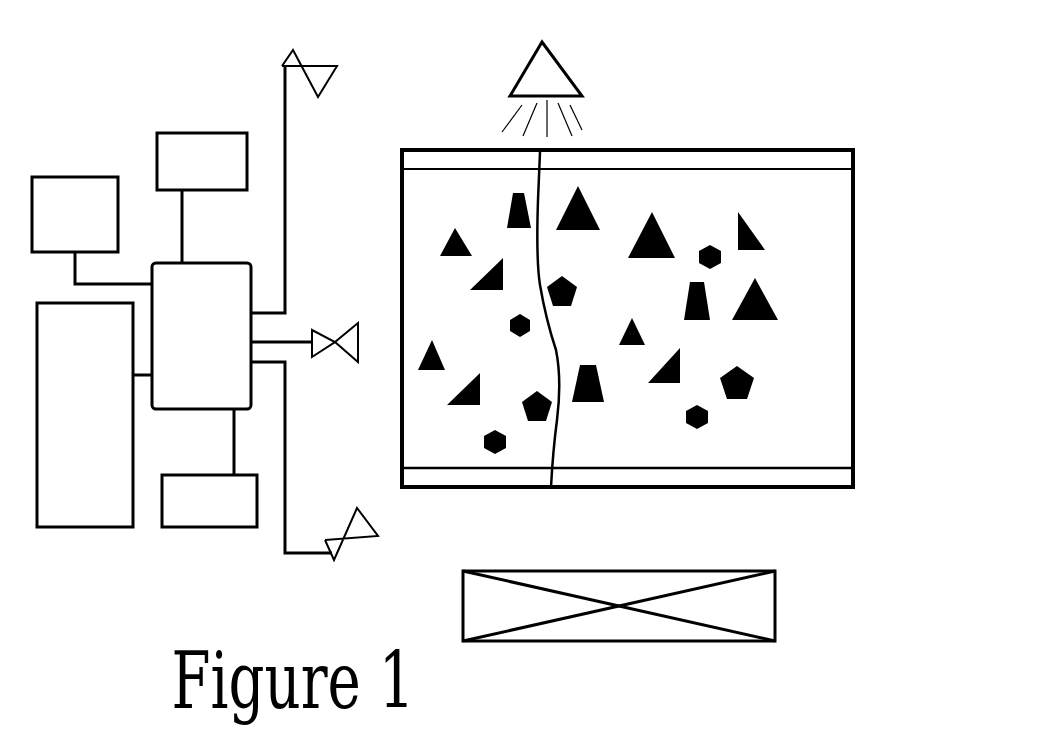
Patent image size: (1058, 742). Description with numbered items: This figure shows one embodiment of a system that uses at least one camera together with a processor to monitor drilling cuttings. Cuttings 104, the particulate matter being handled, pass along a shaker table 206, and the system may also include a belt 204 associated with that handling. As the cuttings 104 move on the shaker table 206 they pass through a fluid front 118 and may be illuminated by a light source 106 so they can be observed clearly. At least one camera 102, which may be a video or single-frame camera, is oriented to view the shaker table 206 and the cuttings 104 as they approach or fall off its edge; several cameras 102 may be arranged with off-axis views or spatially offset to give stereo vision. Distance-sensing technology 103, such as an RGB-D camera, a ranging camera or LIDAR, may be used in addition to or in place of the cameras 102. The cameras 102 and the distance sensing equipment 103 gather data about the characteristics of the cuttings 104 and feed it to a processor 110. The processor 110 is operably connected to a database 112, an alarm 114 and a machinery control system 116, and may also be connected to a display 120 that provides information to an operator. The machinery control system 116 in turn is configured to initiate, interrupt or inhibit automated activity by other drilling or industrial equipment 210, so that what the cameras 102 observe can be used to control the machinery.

The camera 102 is at (329, 301).
The distance-sensing technology 103 is at (304, 365).
The cuttings 104 is at (598, 319).
The light source 106 is at (563, 77).
The processor 110 is at (201, 336).
The database 112 is at (202, 198).
The alarm 114 is at (209, 468).
The machinery control system 116 is at (94, 415).
The fluid front 118 is at (582, 466).
The display 120 is at (92, 230).
The belt 204 is at (853, 300).
The shaker table 206 is at (627, 351).
The equipment 210 is at (619, 628).